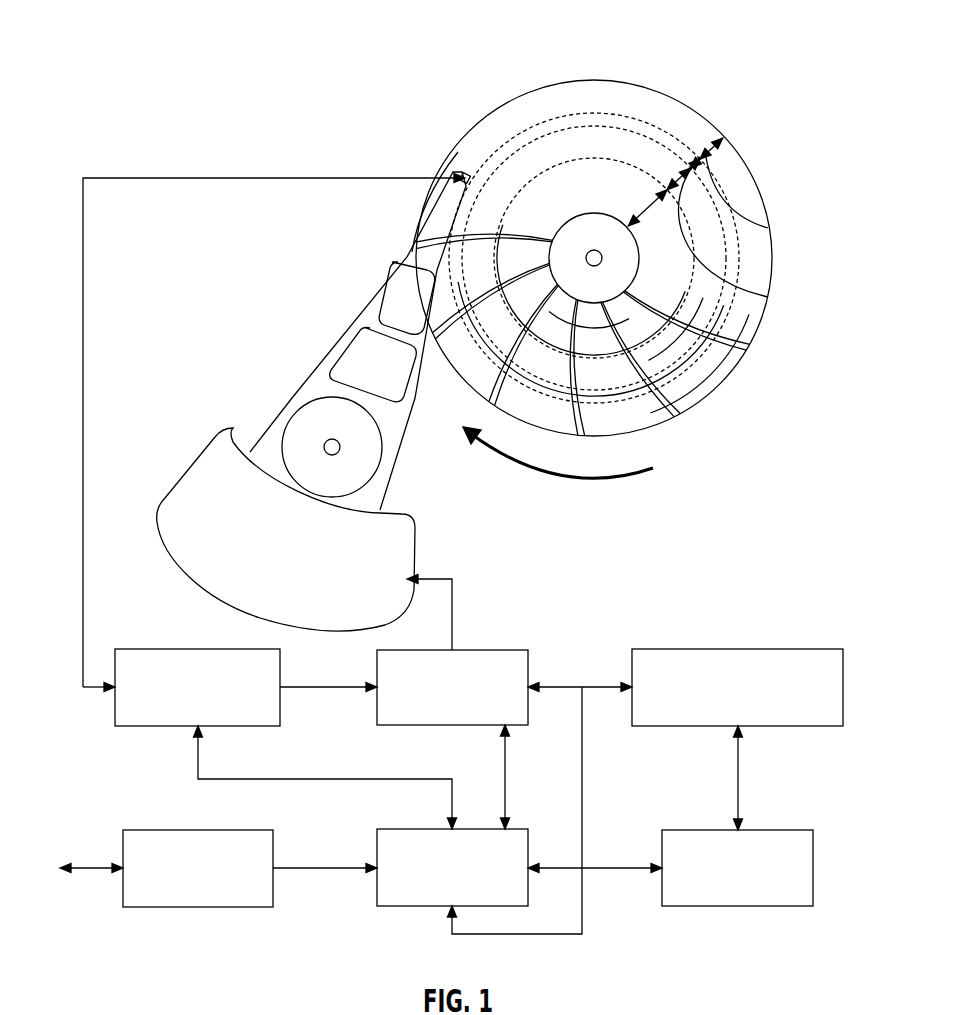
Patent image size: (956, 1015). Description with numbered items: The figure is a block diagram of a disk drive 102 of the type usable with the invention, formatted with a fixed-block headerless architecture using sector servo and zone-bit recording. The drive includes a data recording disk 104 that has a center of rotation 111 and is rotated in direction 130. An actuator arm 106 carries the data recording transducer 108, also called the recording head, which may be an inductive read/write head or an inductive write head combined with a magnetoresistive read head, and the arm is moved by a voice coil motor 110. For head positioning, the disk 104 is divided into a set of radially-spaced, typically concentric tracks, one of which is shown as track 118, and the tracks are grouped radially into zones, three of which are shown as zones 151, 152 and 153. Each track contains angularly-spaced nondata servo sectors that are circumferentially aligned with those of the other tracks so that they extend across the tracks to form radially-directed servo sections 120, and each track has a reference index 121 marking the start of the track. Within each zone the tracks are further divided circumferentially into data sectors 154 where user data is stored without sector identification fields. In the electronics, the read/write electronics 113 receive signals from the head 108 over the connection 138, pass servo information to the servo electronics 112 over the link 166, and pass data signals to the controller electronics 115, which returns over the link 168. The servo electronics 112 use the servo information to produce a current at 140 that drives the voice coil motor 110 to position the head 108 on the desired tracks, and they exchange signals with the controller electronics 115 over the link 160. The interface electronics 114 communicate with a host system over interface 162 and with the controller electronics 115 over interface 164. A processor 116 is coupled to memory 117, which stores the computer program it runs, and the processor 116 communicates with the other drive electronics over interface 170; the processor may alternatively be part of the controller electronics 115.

The disk drive 102 is at (290, 38).
The data recording disk 104 is at (553, 84).
The actuator arm 106 is at (388, 283).
The data recording transducer 108 is at (464, 174).
The voice coil motor 110 is at (222, 433).
The center of rotation 111 is at (592, 250).
The servo electronics 112 is at (505, 649).
The read/write electronics 113 is at (175, 648).
The interface electronics 114 is at (163, 829).
The controller electronics 115 is at (397, 907).
The processor 116 is at (818, 648).
The memory 117 is at (792, 829).
The track 118 is at (490, 140).
The servo sections 120 is at (677, 410).
The reference index 121 is at (743, 347).
The direction of rotation 130 is at (598, 482).
The read/write signal path 138 is at (143, 176).
The current 140 is at (452, 604).
The zone 151 is at (768, 228).
The zone 152 is at (768, 297).
The zone 153 is at (640, 215).
The data sectors 154 is at (718, 367).
The servo-controller signal path 160 is at (506, 783).
The interface 162 is at (102, 866).
The interface 164 is at (293, 866).
The read/write-servo signal path 166 is at (304, 686).
The controller-read/write signal path 168 is at (330, 778).
The interface 170 is at (583, 783).